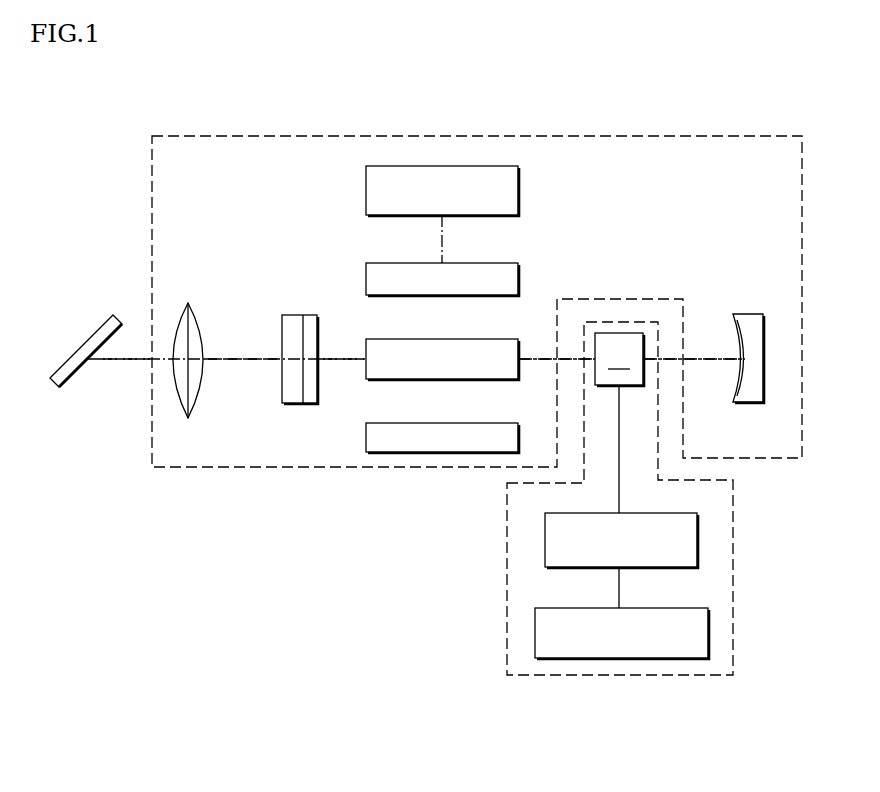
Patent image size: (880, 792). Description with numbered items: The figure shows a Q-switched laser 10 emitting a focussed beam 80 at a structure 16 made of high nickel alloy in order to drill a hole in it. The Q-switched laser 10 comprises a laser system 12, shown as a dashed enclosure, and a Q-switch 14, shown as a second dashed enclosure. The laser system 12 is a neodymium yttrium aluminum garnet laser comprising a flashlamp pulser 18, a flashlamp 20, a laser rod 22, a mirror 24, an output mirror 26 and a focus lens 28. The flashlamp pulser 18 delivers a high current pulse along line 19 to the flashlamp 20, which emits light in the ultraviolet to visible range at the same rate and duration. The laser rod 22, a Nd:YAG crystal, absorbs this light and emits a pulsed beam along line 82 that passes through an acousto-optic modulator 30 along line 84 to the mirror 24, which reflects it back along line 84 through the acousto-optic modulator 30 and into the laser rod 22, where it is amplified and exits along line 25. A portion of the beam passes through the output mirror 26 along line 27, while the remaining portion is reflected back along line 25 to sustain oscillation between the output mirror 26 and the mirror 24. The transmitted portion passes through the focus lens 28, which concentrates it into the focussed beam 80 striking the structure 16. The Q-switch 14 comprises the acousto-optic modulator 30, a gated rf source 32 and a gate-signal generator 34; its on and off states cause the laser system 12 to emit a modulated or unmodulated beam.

The Q-switched laser 10 is at (122, 170).
The laser system 12 is at (538, 133).
The Q-switch 14 is at (663, 498).
The structure 16 is at (82, 343).
The flashlamp pulser 18 is at (520, 193).
The line 19 is at (440, 232).
The flashlamp 20 is at (520, 285).
The laser rod 22 is at (457, 338).
The mirror 24 is at (745, 315).
The line 25 is at (342, 350).
The output mirror 26 is at (297, 315).
The line 27 is at (247, 357).
The focus lens 28 is at (200, 380).
The acousto-optic modulator 30 is at (619, 359).
The gated rf source 32 is at (647, 512).
The gate-signal generator 34 is at (647, 607).
The focussed beam 80 is at (132, 362).
The line 82 is at (542, 360).
The line 84 is at (723, 357).